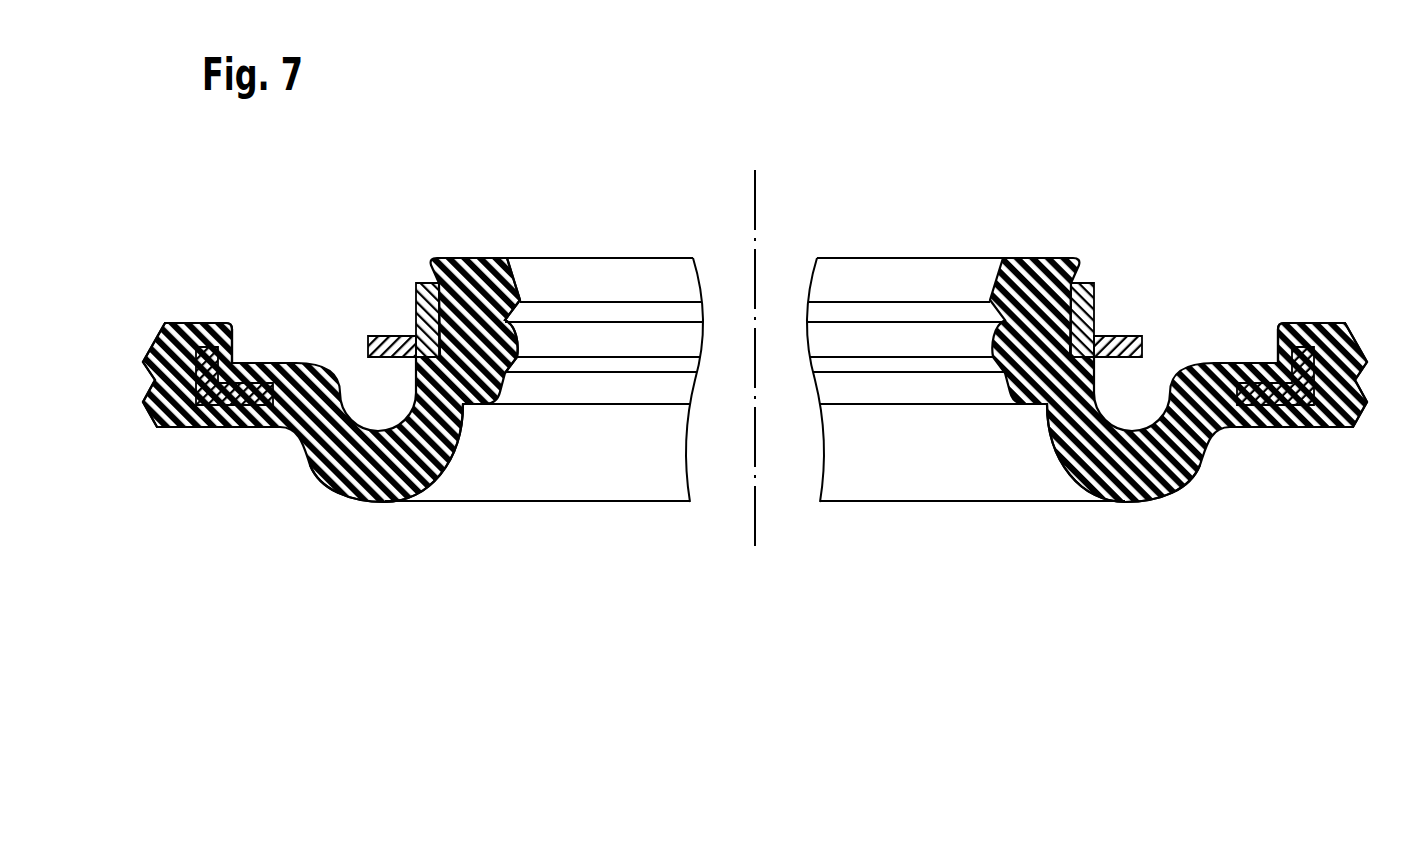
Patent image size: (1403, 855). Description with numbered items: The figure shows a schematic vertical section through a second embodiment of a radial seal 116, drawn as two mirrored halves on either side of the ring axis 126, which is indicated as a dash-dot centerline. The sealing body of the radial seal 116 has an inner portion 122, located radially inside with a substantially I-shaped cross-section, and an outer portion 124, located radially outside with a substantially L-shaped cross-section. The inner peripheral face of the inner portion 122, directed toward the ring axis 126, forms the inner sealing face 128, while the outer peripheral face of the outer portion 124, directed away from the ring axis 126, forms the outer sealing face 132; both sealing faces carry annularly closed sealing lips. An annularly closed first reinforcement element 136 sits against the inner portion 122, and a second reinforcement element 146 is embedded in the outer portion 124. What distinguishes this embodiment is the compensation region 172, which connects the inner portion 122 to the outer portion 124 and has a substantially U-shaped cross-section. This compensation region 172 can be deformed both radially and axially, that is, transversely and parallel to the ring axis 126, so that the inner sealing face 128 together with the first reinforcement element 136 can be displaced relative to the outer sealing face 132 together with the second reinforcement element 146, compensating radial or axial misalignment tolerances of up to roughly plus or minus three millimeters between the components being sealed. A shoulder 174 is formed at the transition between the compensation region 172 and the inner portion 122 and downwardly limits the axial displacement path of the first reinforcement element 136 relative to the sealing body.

The radial seal 116 is at (1088, 238).
The inner portion 122 is at (468, 258).
The outer portion 124 is at (190, 427).
The ring axis 126 is at (757, 192).
The inner sealing face 128 is at (518, 345).
The outer sealing face 132 is at (150, 383).
The first reinforcement element 136 is at (427, 282).
The second reinforcement element 146 is at (250, 398).
The compensation region 172 is at (388, 500).
The shoulder 174 is at (420, 350).